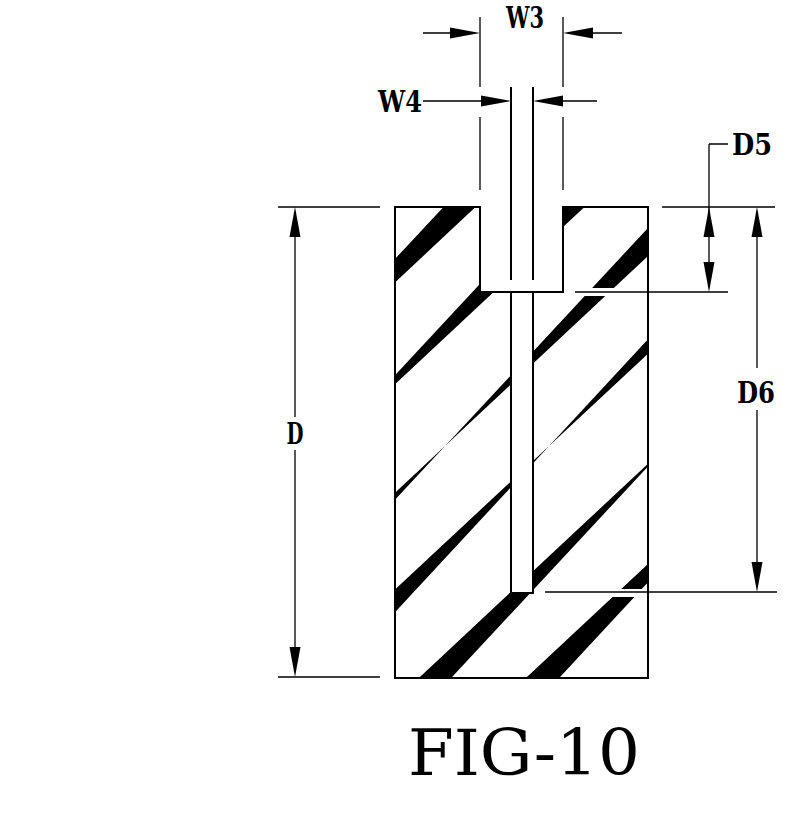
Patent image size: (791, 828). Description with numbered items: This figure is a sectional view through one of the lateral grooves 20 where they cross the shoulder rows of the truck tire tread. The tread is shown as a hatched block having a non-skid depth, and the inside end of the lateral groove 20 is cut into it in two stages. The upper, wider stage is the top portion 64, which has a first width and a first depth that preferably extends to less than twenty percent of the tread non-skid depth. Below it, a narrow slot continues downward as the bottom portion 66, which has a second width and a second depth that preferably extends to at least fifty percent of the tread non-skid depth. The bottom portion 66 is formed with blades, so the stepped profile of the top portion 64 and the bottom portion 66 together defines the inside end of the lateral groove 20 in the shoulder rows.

The lateral groove 20 is at (443, 169).
The top portion 64 is at (363, 262).
The bottom portion 66 is at (363, 446).